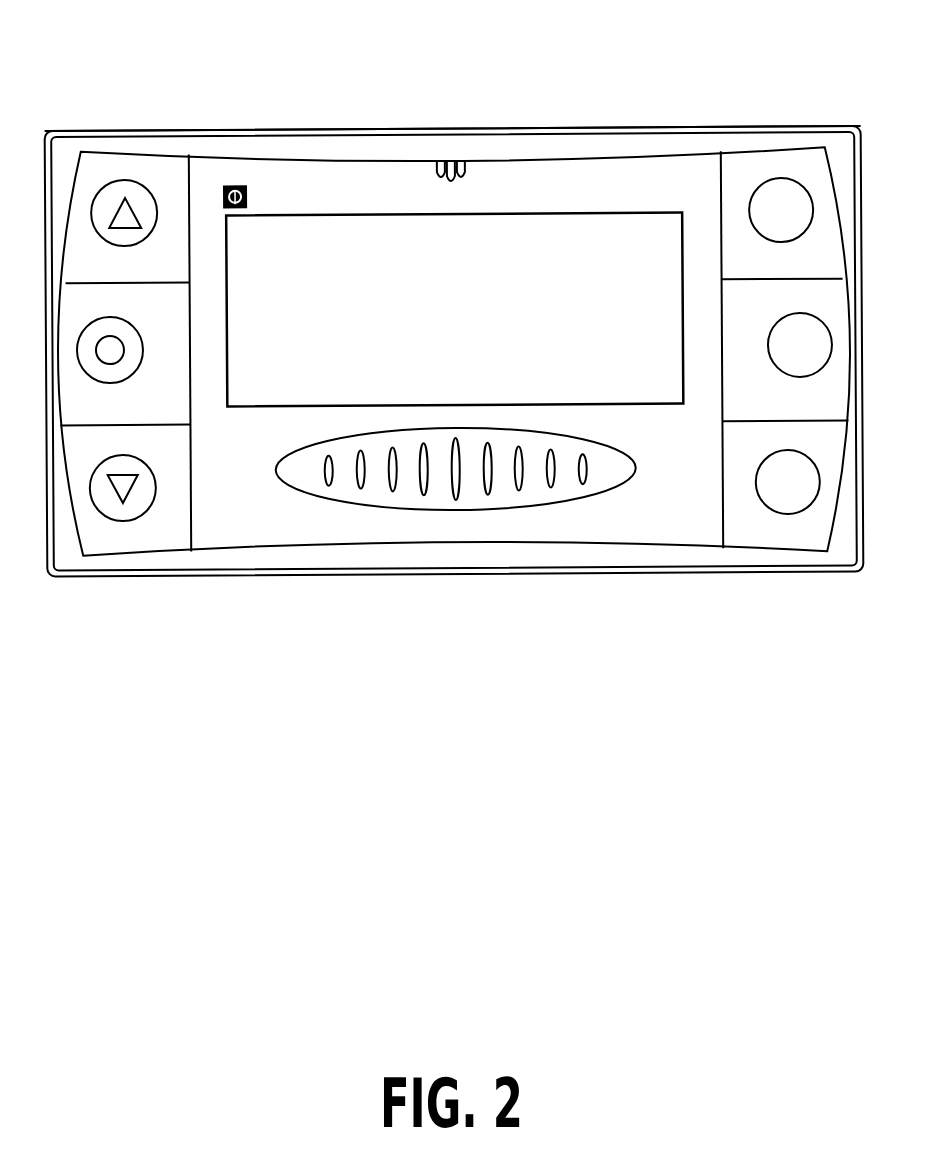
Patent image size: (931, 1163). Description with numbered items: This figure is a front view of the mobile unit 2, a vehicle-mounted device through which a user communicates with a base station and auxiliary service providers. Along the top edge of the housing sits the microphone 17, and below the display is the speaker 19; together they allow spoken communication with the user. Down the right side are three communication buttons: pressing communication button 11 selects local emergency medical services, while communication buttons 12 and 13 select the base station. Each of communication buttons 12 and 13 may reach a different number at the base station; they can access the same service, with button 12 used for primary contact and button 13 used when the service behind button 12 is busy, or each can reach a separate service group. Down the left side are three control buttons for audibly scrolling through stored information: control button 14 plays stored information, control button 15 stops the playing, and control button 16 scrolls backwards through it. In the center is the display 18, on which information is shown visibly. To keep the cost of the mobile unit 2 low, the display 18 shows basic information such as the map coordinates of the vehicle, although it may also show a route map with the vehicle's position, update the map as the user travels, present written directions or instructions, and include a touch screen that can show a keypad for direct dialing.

The mobile unit 2 is at (101, 36).
The communication button 11 is at (770, 239).
The communication button 12 is at (770, 361).
The communication button 13 is at (764, 507).
The control button 14 is at (143, 240).
The control button 15 is at (141, 363).
The control button 16 is at (146, 505).
The microphone 17 is at (455, 129).
The display 18 is at (462, 326).
The speaker 19 is at (600, 493).